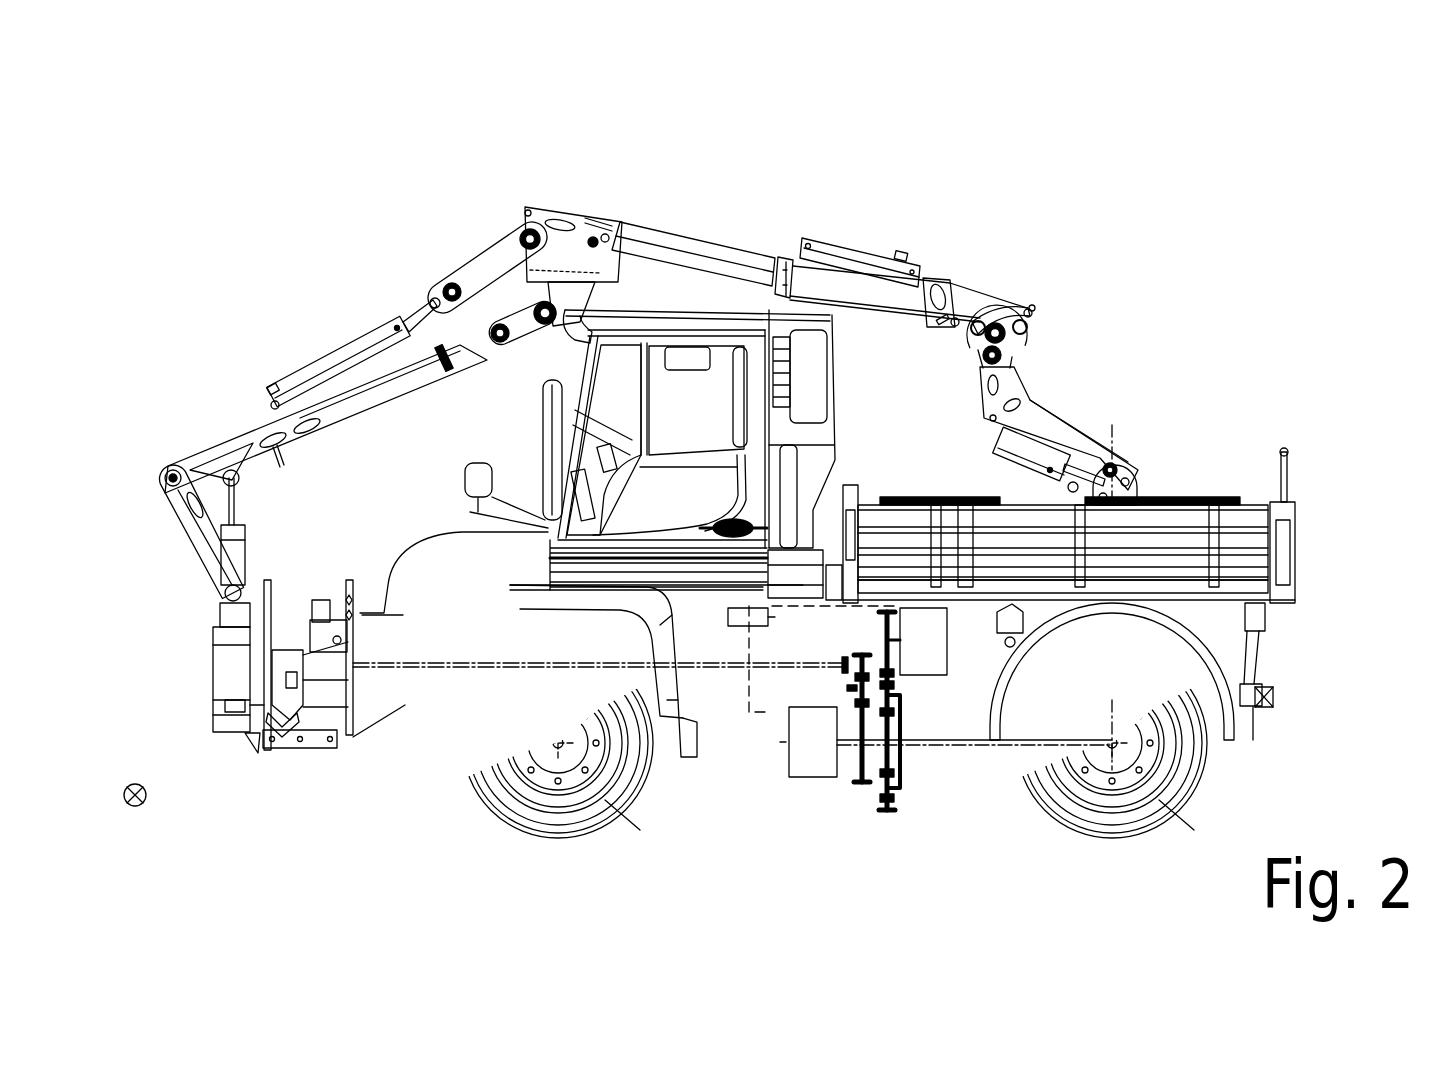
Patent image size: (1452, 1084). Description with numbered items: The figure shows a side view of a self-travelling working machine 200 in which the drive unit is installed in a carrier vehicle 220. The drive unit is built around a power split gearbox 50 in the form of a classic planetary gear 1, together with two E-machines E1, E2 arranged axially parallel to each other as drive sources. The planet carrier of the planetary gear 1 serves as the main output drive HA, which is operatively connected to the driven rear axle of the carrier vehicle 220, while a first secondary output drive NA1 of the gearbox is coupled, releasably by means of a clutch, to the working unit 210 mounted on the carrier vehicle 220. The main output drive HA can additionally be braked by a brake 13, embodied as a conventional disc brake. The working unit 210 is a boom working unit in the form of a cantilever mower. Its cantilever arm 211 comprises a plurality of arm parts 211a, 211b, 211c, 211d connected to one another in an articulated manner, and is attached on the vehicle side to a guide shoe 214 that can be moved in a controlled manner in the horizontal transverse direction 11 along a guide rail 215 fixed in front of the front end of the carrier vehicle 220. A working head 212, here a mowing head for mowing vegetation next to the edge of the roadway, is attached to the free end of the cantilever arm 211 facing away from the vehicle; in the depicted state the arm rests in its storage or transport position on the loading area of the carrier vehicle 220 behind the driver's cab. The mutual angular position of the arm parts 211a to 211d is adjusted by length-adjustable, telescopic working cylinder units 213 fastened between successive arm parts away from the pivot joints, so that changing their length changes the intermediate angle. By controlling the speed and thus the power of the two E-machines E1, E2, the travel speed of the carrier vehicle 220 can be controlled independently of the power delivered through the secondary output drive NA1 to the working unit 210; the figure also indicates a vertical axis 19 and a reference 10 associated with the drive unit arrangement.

The self-travelling working machine 200 is at (1180, 232).
The working unit 210 is at (350, 212).
The cantilever arm 211 is at (252, 257).
The arm part 211a is at (205, 550).
The arm part 211b is at (398, 383).
The arm part 211c is at (682, 258).
The arm part 211d is at (1073, 445).
The working head 212 is at (1172, 497).
The working cylinder unit 213 is at (930, 282).
The guide shoe 214 is at (290, 722).
The guide rail 215 is at (295, 658).
The brake 13 is at (288, 722).
The vertical axis 19 is at (1116, 434).
The carrier vehicle 220 is at (1290, 636).
The drive system 10 is at (893, 847).
The planetary gear 1 is at (944, 747).
The power split gearbox 50 is at (928, 811).
The horizontal transverse direction 11 is at (123, 795).
The E-machine E1 is at (808, 742).
The E-machine E2 is at (917, 641).
The first secondary output drive NA1 is at (418, 660).
The main output drive HA is at (1078, 735).